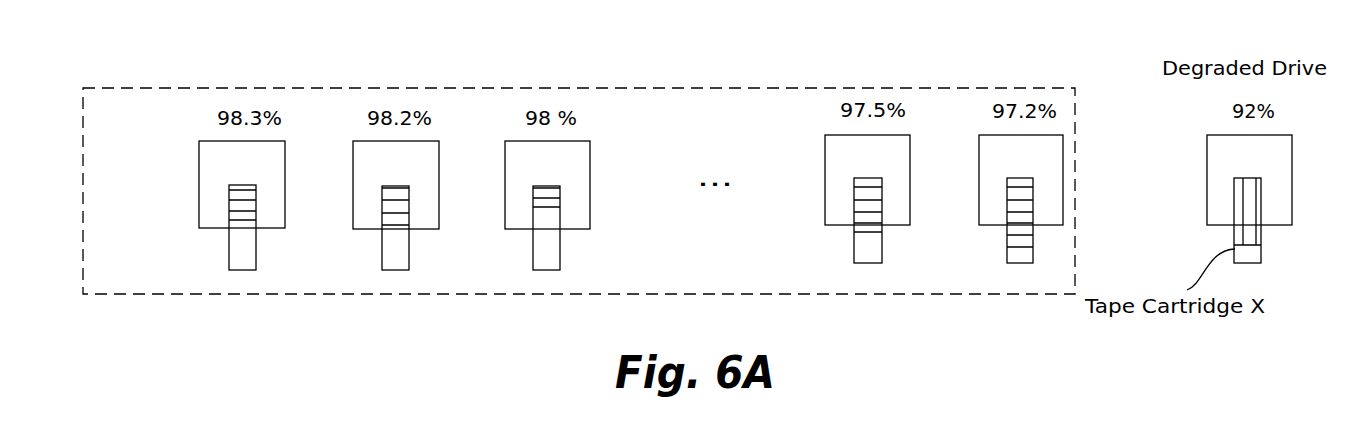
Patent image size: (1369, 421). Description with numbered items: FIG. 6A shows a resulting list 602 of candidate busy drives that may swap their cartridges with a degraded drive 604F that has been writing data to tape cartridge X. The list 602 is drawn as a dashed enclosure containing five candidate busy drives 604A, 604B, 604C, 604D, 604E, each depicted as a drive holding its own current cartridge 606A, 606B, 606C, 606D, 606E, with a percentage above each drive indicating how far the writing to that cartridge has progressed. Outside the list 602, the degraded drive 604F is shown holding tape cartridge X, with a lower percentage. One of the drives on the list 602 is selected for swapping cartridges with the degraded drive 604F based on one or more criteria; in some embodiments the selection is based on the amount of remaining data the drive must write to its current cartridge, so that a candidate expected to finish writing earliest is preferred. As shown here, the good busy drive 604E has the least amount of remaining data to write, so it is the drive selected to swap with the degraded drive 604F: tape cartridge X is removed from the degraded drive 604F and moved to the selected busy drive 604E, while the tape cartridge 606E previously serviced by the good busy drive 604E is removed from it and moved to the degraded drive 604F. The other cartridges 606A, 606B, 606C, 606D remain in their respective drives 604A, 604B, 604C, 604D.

The resulting list of candidate busy drives 602 is at (579, 152).
The candidate busy drive 604A is at (199, 217).
The candidate busy drive 604B is at (353, 217).
The candidate busy drive 604C is at (505, 217).
The candidate busy drive 604D is at (825, 205).
The good busy drive 604E is at (980, 205).
The degraded drive 604F is at (1207, 204).
The cartridge 606A is at (230, 270).
The cartridge 606B is at (383, 252).
The cartridge 606C is at (533, 260).
The cartridge 606D is at (854, 252).
The tape cartridge 606E is at (1007, 260).